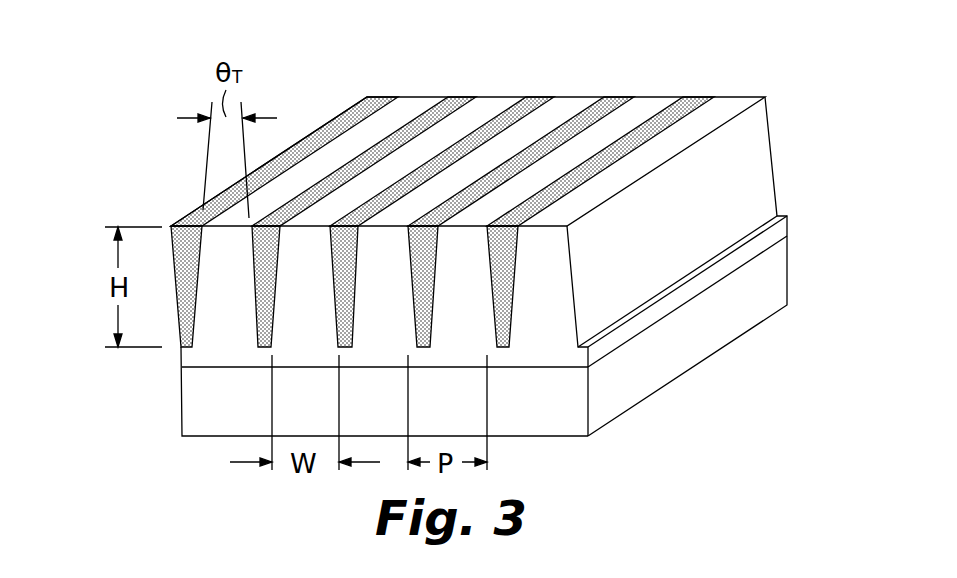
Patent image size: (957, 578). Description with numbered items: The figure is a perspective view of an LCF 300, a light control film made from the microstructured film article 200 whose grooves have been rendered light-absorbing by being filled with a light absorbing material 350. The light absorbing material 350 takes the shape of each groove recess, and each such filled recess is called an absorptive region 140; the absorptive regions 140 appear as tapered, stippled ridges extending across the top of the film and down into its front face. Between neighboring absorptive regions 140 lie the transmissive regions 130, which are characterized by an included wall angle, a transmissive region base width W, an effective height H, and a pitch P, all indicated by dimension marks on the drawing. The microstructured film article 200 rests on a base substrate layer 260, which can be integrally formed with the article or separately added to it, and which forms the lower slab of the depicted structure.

The LCF 300 is at (500, 249).
The light absorbing material 350 is at (530, 98).
The microstructured film article 200 is at (712, 231).
The base substrate layer 260 is at (247, 413).
The transmissive region 130 is at (548, 295).
The absorptive region 140 is at (511, 293).